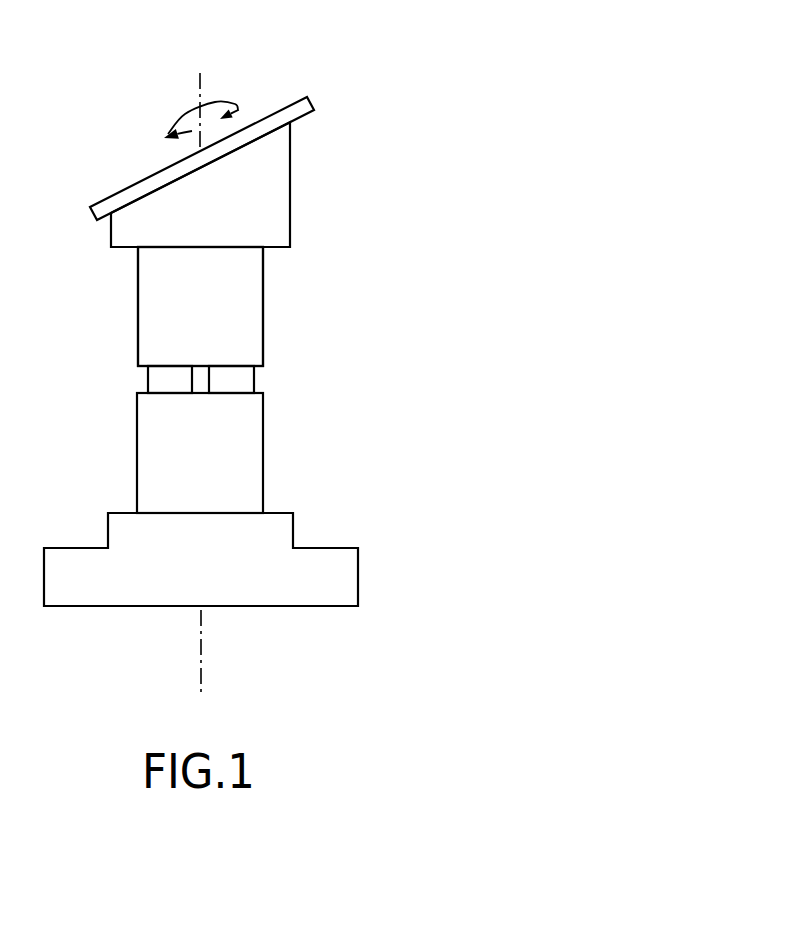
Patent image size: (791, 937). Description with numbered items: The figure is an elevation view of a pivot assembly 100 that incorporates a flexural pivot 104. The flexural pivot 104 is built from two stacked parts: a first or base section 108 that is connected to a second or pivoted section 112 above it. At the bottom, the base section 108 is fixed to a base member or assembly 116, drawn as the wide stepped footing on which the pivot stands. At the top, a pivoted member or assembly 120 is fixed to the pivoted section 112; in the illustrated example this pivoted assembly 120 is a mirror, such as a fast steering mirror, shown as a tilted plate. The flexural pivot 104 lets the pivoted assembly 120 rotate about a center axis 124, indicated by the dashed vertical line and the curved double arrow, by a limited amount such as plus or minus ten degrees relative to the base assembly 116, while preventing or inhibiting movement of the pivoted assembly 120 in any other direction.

The pivot assembly 100 is at (248, 36).
The flexural pivot 104 is at (278, 317).
The base section 108 is at (250, 458).
The pivoted section 112 is at (157, 313).
The base assembly 116 is at (332, 552).
The pivoted assembly 120 is at (283, 108).
The center axis 124 is at (192, 113).